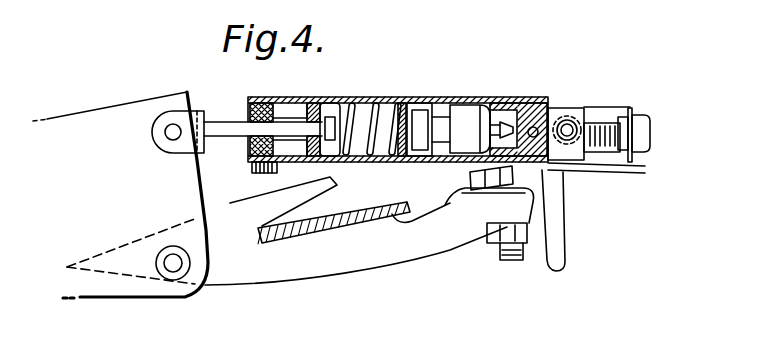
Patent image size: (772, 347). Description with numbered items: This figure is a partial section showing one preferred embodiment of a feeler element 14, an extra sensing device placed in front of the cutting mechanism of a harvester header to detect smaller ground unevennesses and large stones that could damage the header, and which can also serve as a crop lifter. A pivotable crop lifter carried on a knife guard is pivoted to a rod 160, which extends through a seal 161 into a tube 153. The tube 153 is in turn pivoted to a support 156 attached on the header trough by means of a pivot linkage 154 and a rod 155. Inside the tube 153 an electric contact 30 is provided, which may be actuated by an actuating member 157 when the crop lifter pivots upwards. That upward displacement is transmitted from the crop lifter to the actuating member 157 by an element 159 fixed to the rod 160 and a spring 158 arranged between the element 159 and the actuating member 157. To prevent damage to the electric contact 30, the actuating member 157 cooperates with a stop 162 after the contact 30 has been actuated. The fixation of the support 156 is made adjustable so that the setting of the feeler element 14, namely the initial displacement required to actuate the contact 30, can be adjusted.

The feeler element 14 is at (110, 92).
The electric contact 30 is at (477, 98).
The tube 153 is at (373, 98).
The pivot linkage 154 is at (560, 108).
The rod 155 is at (601, 110).
The support 156 is at (642, 108).
The actuating member 157 is at (408, 98).
The spring 158 is at (353, 98).
The element 159 is at (322, 98).
The rod 160 is at (227, 123).
The seal 161 is at (247, 145).
The stop 162 is at (446, 98).